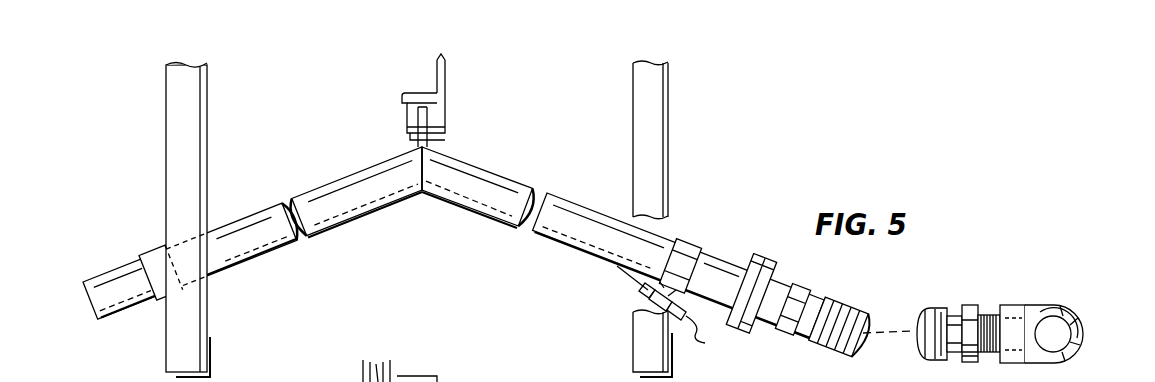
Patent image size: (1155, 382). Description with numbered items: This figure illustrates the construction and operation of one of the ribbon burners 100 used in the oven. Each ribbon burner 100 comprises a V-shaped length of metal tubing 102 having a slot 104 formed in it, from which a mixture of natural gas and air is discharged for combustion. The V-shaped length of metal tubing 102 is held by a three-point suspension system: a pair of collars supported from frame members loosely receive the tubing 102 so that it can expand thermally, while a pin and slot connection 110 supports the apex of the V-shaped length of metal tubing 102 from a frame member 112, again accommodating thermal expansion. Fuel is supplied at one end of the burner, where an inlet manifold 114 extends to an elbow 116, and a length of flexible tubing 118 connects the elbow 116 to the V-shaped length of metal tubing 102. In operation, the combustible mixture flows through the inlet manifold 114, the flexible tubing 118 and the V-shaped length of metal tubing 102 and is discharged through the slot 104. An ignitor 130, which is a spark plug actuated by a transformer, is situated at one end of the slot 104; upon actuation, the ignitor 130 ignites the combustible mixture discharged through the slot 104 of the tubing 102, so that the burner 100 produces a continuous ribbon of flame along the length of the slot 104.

The ribbon burner 100 is at (343, 172).
The V-shaped length of metal tubing 102 is at (510, 173).
The slot 104 is at (449, 208).
The pin and slot connection 110 is at (443, 118).
The frame member 112 is at (446, 76).
The inlet manifold 114 is at (1073, 311).
The elbow 116 is at (1008, 305).
The flexible tubing 118 is at (853, 311).
The ignitor 130 is at (640, 297).